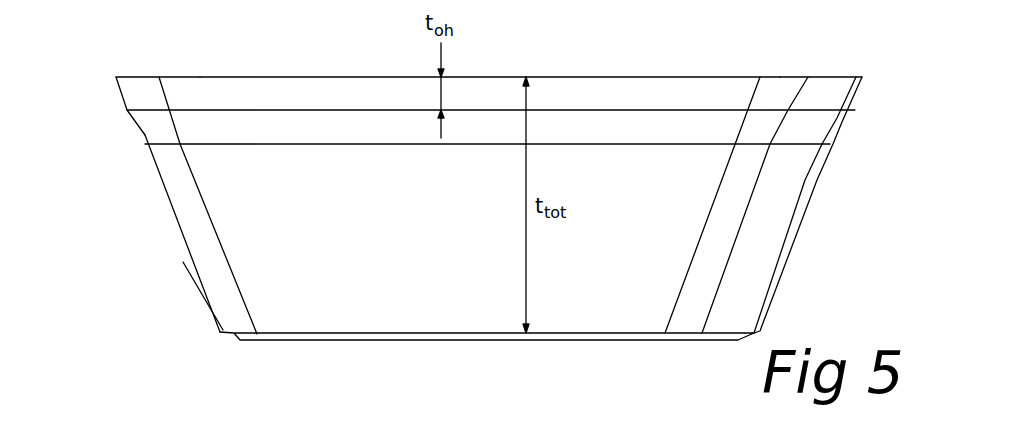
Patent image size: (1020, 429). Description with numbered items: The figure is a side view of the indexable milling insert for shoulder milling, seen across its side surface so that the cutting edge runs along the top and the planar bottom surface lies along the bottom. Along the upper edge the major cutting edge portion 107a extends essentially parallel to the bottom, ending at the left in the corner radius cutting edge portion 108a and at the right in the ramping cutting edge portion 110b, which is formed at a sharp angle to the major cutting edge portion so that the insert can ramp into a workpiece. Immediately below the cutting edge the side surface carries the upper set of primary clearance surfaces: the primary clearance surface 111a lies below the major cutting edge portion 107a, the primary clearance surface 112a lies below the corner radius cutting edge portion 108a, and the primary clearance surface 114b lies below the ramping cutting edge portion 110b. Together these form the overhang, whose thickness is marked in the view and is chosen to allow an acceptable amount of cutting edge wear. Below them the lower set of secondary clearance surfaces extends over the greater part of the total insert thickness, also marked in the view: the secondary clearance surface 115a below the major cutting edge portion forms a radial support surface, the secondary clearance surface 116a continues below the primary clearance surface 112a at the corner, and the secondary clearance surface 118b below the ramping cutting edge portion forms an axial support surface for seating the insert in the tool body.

The major cutting edge portion 107a is at (607, 76).
The corner radius cutting edge portion 108a is at (147, 76).
The ramping cutting edge portion 110b is at (832, 76).
The primary clearance surface 111a is at (334, 95).
The primary clearance surface 112a is at (140, 95).
The primary clearance surface 114b is at (828, 96).
The secondary clearance surface 115a is at (268, 202).
The secondary clearance surface 116a is at (223, 287).
The secondary clearance surface 118b is at (772, 216).